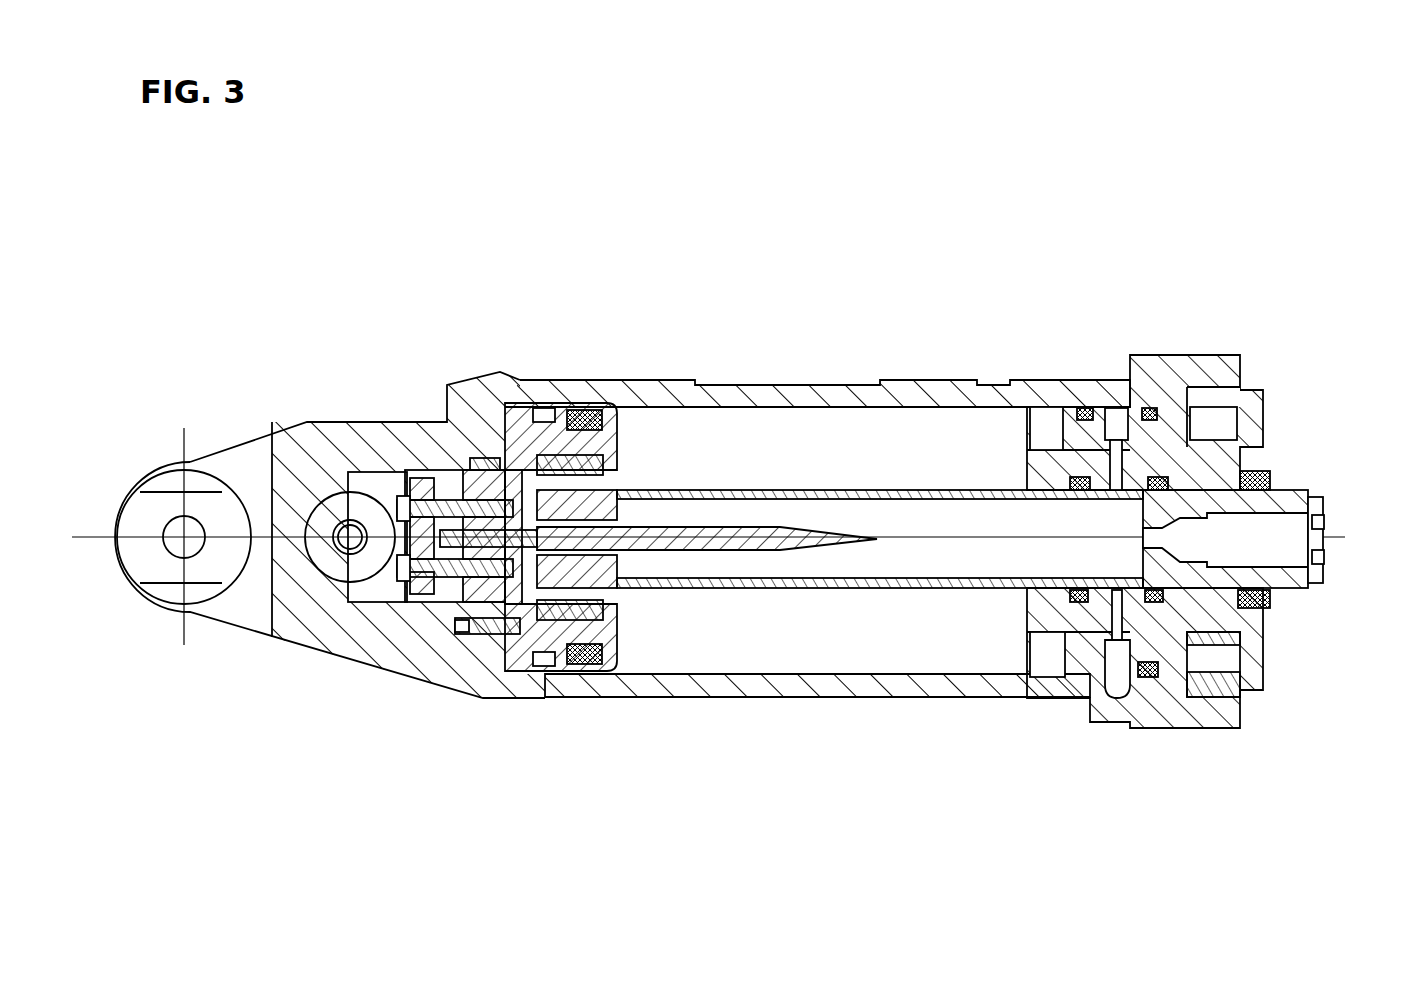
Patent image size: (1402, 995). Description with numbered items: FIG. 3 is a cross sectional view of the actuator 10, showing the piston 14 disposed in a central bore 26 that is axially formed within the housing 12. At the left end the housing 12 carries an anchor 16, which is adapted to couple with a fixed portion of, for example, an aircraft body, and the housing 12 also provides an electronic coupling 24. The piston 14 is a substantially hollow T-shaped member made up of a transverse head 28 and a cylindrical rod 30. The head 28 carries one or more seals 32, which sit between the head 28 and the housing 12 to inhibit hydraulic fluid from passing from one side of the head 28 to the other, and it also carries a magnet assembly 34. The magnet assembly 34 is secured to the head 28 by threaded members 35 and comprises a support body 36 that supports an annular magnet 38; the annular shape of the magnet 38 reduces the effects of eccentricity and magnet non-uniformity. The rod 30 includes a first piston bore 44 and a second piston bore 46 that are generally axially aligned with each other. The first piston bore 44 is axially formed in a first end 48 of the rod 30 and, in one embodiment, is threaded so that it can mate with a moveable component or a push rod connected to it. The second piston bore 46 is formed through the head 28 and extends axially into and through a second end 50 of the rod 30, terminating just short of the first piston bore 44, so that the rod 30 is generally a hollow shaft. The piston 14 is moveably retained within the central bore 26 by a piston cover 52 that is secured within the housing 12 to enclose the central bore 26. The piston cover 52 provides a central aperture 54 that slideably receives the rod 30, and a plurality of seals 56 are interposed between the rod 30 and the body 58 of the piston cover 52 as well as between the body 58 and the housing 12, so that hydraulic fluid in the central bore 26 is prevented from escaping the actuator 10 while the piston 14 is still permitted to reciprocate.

The actuator 10 is at (823, 146).
The housing 12 is at (827, 380).
The actuator piston 14 is at (1306, 477).
The anchor 16 is at (240, 465).
The electronic coupling 24 is at (343, 507).
The central bore 26 is at (930, 436).
The head 28 is at (615, 446).
The rod 30 is at (724, 491).
The seals 32 is at (582, 408).
The magnet assembly 34 is at (598, 566).
The threaded members 35 is at (520, 630).
The support body 36 is at (612, 495).
The magnet 38 is at (610, 575).
The first piston bore 44 is at (1285, 532).
The second piston bore 46 is at (956, 554).
The first end 48 is at (1296, 582).
The second end 50 is at (612, 496).
The piston cover 52 is at (1287, 446).
The central aperture 54 is at (1046, 595).
The seals 56 is at (1085, 410).
The body 58 is at (1092, 635).